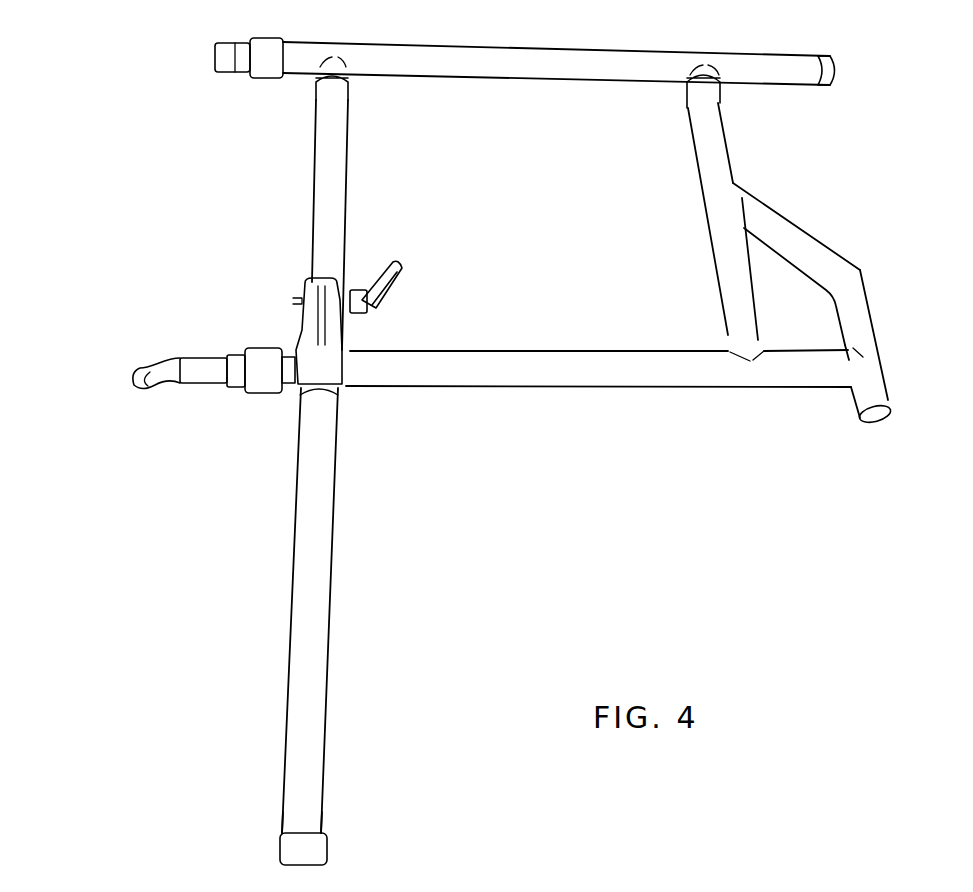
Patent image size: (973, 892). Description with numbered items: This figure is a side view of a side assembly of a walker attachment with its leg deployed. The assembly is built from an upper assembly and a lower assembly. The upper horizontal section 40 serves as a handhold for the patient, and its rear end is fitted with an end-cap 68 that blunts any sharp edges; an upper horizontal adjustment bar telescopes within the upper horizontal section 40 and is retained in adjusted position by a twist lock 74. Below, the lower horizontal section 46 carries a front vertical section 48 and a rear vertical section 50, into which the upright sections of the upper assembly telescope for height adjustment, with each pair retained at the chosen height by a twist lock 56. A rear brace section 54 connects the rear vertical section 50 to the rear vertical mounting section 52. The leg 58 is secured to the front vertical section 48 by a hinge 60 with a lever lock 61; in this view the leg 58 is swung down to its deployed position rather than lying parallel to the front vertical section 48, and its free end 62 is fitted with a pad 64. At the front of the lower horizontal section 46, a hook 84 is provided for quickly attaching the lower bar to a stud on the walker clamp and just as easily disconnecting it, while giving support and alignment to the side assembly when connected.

The upper horizontal section 40 is at (540, 50).
The lower horizontal section 46 is at (510, 375).
The front vertical section 48 is at (330, 198).
The rear vertical section 50 is at (728, 272).
The rear vertical mounting section 52 is at (876, 388).
The rear brace section 54 is at (800, 250).
The twist lock 56 is at (340, 96).
The leg 58 is at (312, 555).
The hinge 60 is at (300, 312).
The lever lock 61 is at (398, 292).
The free end 62 is at (308, 818).
The pad 64 is at (315, 843).
The end-cap 68 is at (832, 63).
The twist lock 74 is at (266, 42).
The hook 84 is at (163, 392).